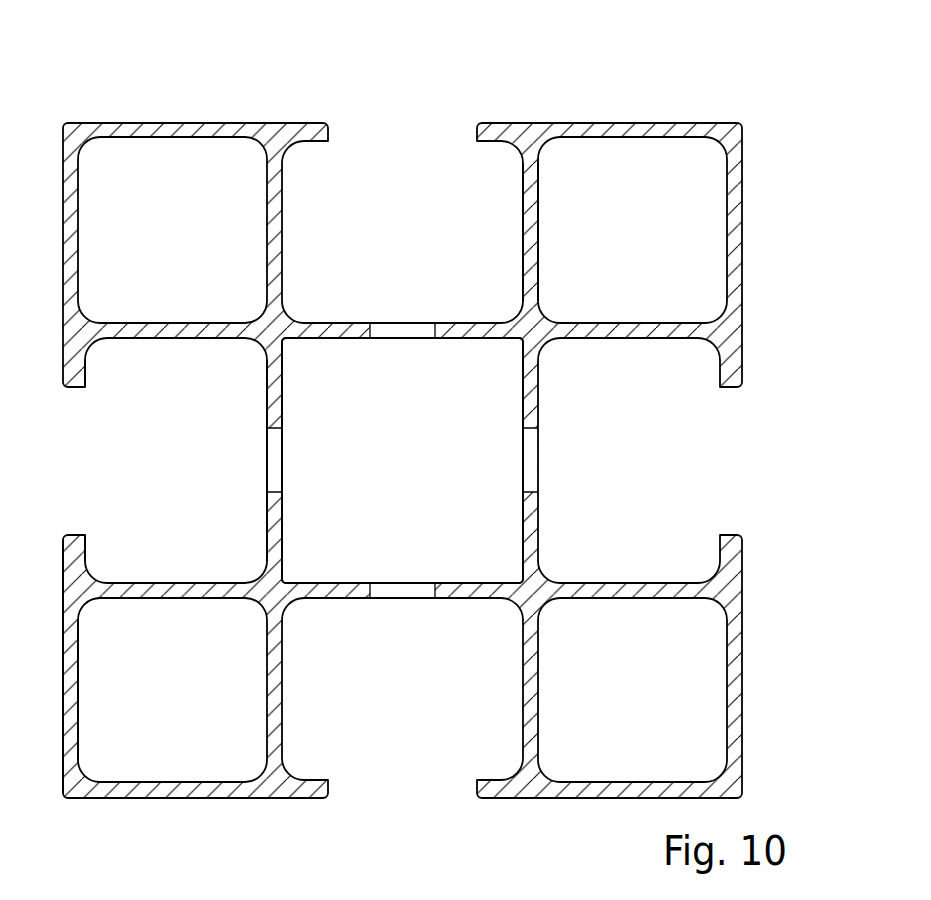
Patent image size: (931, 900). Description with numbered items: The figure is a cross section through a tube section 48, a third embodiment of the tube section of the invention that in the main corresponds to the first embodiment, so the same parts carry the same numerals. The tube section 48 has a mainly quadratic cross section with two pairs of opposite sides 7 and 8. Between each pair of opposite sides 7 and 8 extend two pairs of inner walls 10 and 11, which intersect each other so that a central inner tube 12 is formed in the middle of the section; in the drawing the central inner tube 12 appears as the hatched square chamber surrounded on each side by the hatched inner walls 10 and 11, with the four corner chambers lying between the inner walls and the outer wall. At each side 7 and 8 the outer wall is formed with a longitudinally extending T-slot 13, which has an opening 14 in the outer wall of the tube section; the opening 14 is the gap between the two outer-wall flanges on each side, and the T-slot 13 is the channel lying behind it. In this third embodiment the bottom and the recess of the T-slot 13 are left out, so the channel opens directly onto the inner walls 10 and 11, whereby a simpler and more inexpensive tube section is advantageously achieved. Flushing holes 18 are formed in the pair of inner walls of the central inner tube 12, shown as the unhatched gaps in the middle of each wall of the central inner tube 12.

The tube section 48 is at (224, 100).
The opposite side 8 is at (628, 122).
The inner wall 10 is at (538, 242).
The inner wall 11 is at (622, 323).
The opposite side 7 is at (78, 710).
The central inner tube 12 is at (420, 466).
The T-slot 13 is at (189, 467).
The opening 14 is at (72, 472).
The flushing hole 18 is at (282, 470).